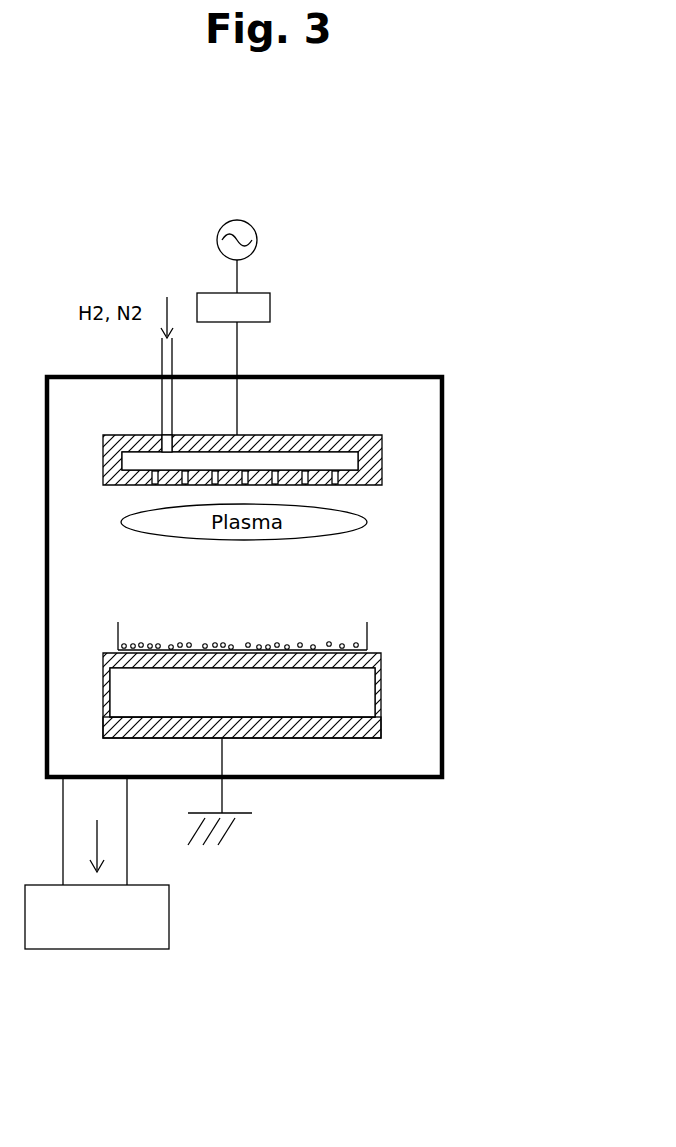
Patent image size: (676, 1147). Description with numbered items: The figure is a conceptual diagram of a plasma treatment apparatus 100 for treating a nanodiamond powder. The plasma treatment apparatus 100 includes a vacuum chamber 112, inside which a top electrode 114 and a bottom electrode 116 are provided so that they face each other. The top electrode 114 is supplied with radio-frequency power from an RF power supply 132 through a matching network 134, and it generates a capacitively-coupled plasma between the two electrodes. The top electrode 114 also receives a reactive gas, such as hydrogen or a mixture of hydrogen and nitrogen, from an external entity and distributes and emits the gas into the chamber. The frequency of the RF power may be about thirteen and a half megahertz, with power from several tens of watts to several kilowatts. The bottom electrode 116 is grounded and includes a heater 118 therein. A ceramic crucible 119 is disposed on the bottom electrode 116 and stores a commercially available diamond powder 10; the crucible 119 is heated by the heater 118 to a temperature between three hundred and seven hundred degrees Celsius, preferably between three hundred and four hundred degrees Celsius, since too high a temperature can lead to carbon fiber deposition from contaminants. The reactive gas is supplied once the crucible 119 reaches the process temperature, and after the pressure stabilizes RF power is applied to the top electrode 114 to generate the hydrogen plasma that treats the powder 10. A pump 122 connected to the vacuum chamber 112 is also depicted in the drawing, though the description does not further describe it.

The plasma treatment apparatus 100 is at (130, 233).
The vacuum chamber 112 is at (442, 397).
The top electrode 114 is at (382, 460).
The bottom electrode 116 is at (381, 685).
The heater 118 is at (327, 722).
The crucible 119 is at (367, 628).
The diamond powder 10 is at (283, 645).
The pump 122 is at (169, 912).
The RF power supply 132 is at (256, 237).
The matching network 134 is at (270, 303).